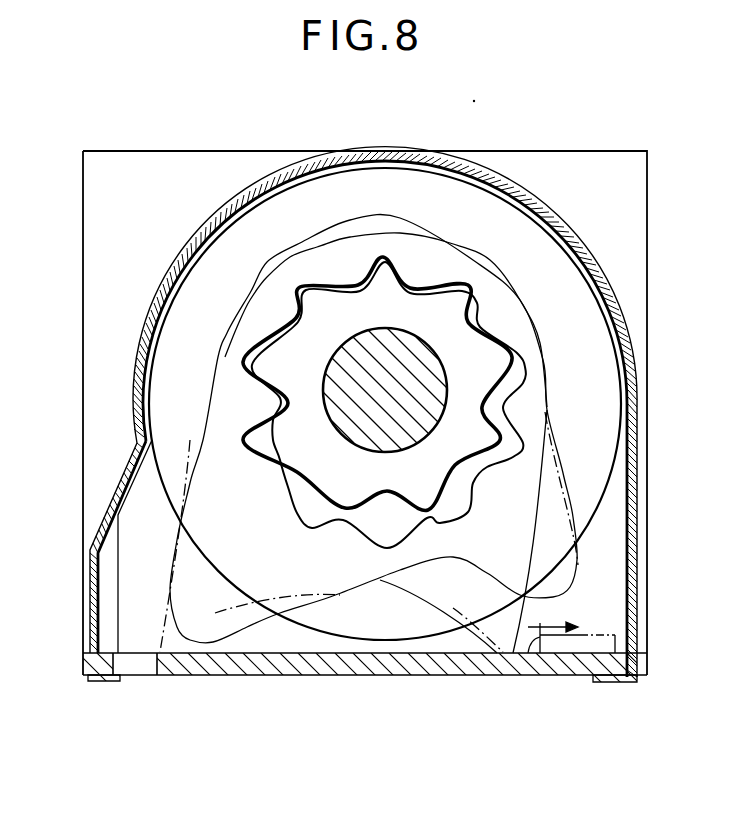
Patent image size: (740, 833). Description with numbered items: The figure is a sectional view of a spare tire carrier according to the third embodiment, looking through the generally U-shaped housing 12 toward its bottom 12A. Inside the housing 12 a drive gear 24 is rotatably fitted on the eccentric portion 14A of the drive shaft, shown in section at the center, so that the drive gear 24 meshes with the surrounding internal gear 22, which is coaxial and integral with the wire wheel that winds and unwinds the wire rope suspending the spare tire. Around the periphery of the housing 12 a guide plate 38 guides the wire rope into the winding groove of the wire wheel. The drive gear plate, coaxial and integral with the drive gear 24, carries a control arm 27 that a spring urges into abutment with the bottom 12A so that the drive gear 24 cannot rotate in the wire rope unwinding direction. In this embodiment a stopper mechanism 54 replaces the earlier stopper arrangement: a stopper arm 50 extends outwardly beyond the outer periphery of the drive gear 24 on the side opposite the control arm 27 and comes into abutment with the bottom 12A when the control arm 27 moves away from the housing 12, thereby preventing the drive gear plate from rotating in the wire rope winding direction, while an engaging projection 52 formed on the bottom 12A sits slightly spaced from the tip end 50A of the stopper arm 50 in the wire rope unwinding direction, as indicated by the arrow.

The housing 12 is at (694, 482).
The bottom 12A is at (296, 654).
The eccentric portion 14A is at (403, 347).
The internal gear 22 is at (300, 516).
The drive gear 24 is at (382, 283).
The control arm 27 is at (127, 600).
The guide plate 38 is at (258, 182).
The stopper arm 50 is at (473, 676).
The tip end 50A is at (508, 676).
The engaging projection 52 is at (543, 676).
The stopper mechanism 54 is at (537, 710).